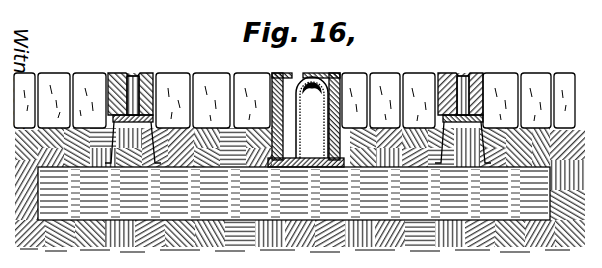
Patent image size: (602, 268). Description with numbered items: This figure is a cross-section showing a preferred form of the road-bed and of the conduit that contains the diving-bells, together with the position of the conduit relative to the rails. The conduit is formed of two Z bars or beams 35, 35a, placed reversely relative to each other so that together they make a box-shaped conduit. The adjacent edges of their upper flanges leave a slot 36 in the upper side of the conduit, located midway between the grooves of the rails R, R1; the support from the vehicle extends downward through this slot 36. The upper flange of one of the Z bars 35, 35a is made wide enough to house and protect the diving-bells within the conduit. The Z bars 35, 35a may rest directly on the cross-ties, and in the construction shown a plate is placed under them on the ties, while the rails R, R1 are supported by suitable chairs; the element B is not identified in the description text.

The rail R is at (129, 72).
The rail R1 is at (468, 72).
The Z bar 35 is at (328, 72).
The Z bar 35a is at (282, 72).
The slot 36 is at (297, 74).
The conduit B is at (312, 117).